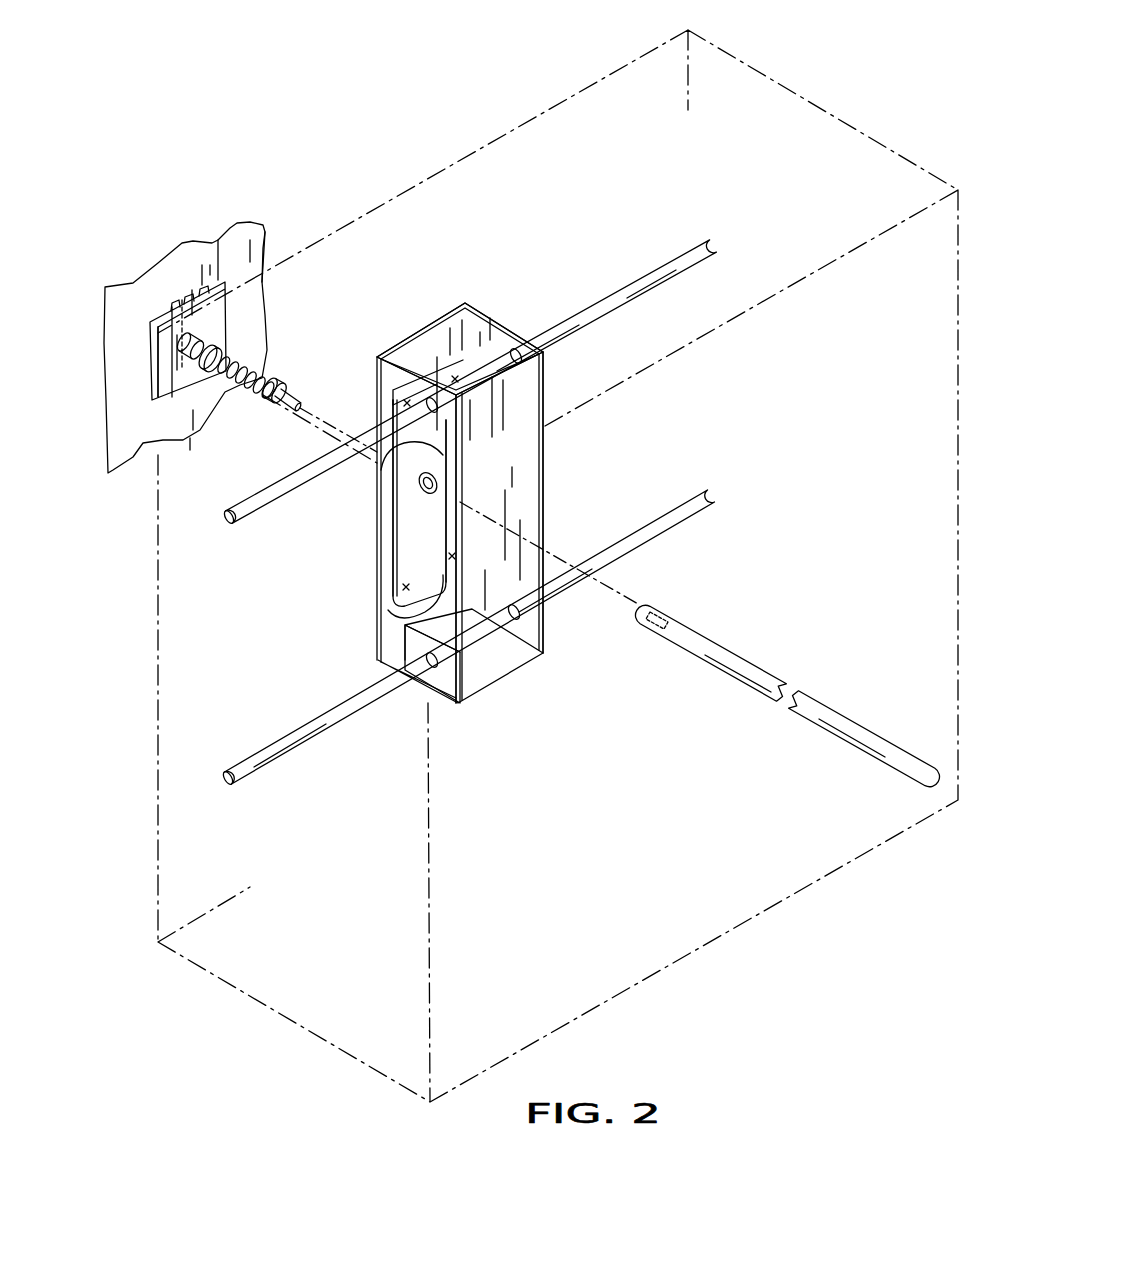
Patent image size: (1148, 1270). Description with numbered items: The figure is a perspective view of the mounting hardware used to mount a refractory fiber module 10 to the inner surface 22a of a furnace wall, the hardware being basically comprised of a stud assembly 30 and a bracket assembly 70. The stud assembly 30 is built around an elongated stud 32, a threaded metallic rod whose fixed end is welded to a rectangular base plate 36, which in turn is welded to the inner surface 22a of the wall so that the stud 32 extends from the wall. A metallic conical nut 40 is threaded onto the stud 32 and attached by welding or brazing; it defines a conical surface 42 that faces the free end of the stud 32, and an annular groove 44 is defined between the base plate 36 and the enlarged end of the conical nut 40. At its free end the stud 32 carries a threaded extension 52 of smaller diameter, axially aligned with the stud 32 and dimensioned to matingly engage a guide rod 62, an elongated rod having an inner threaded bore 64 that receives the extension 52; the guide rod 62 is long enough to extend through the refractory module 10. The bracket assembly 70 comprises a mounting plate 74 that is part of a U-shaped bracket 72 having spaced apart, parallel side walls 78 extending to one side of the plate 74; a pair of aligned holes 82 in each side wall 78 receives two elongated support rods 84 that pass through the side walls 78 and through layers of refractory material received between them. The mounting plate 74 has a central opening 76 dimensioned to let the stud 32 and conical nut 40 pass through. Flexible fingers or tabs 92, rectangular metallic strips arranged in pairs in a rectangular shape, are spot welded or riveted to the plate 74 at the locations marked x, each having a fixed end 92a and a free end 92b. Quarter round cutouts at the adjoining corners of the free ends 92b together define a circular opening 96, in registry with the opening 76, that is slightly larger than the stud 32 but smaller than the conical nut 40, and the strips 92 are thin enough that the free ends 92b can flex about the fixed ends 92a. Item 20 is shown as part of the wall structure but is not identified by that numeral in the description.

The refractory fiber module 10 is at (824, 82).
The wall/support structure 20 is at (160, 262).
The inner surface 22a is at (245, 240).
The stud assembly 30 is at (243, 343).
The stud 32 is at (267, 358).
The base plate 36 is at (168, 338).
The conical nut 40 is at (210, 460).
The conical surface 42 is at (213, 362).
The annular groove 44 is at (215, 327).
The threaded extension 52 is at (287, 390).
The guide rod 62 is at (765, 678).
The inner threaded bore 64 is at (660, 624).
The bracket assembly 70 is at (560, 285).
The U-shaped bracket 72 is at (495, 310).
The mounting plate 74 is at (432, 330).
The central opening 76 is at (395, 468).
The side walls 78 is at (478, 327).
The holes 82 is at (520, 363).
The support rods 84 is at (682, 255).
The flexible fingers or tabs 92 is at (447, 522).
The fixed end 92a is at (437, 373).
The free end 92b is at (430, 508).
The circular opening 96 is at (447, 478).